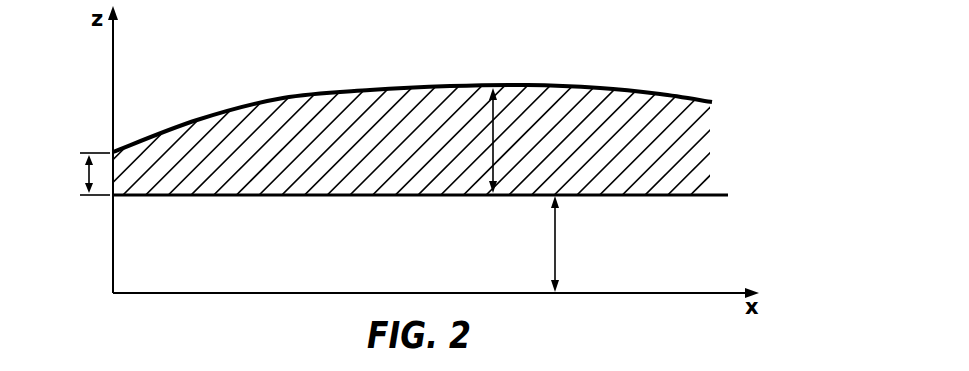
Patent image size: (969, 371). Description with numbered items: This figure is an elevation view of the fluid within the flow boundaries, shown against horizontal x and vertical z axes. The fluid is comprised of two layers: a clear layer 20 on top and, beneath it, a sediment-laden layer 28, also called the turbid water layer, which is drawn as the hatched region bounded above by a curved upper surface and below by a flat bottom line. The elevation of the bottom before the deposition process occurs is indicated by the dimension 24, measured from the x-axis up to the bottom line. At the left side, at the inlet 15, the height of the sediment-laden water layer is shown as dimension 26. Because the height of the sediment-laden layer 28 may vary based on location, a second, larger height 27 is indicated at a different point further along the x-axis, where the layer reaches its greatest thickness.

The inlet 15 is at (112, 197).
The clear layer 20 is at (412, 78).
The elevation of the bottom 24 is at (553, 239).
The height of the sediment-laden water layer at inlet 26 is at (87, 174).
The height of the sediment-laden water layer 27 is at (490, 105).
The sediment-laden layer 28 is at (437, 120).